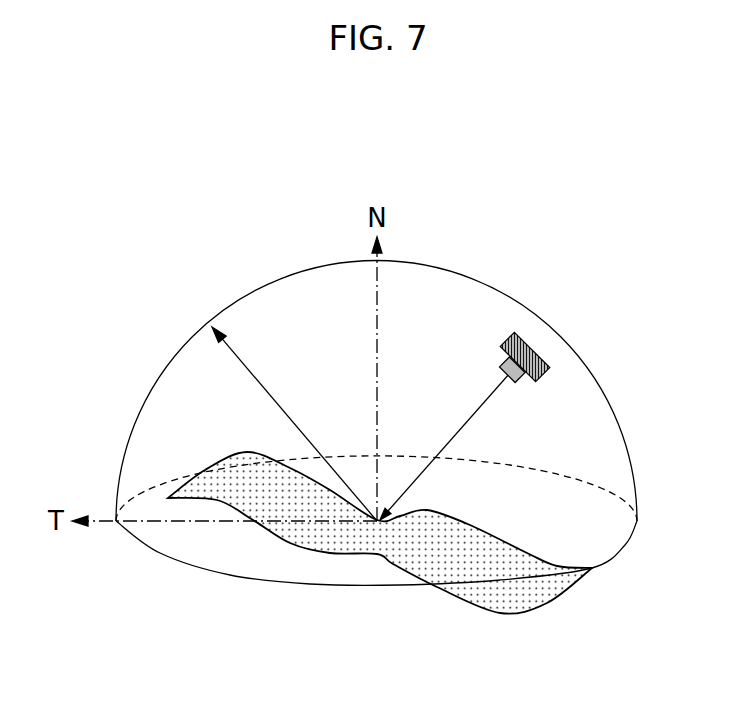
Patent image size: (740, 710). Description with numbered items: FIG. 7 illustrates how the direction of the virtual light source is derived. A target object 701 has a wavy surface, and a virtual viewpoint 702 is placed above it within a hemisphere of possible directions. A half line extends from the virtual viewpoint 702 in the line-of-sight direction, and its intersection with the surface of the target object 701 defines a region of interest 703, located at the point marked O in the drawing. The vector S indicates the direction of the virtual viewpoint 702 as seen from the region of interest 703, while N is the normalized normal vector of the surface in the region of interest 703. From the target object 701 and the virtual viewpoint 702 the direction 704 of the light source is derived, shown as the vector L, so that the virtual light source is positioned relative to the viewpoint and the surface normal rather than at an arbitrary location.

The target object 701 is at (570, 578).
The virtual viewpoint 702 is at (532, 347).
The region of interest 703 is at (403, 517).
The direction of the light source 704 is at (233, 347).